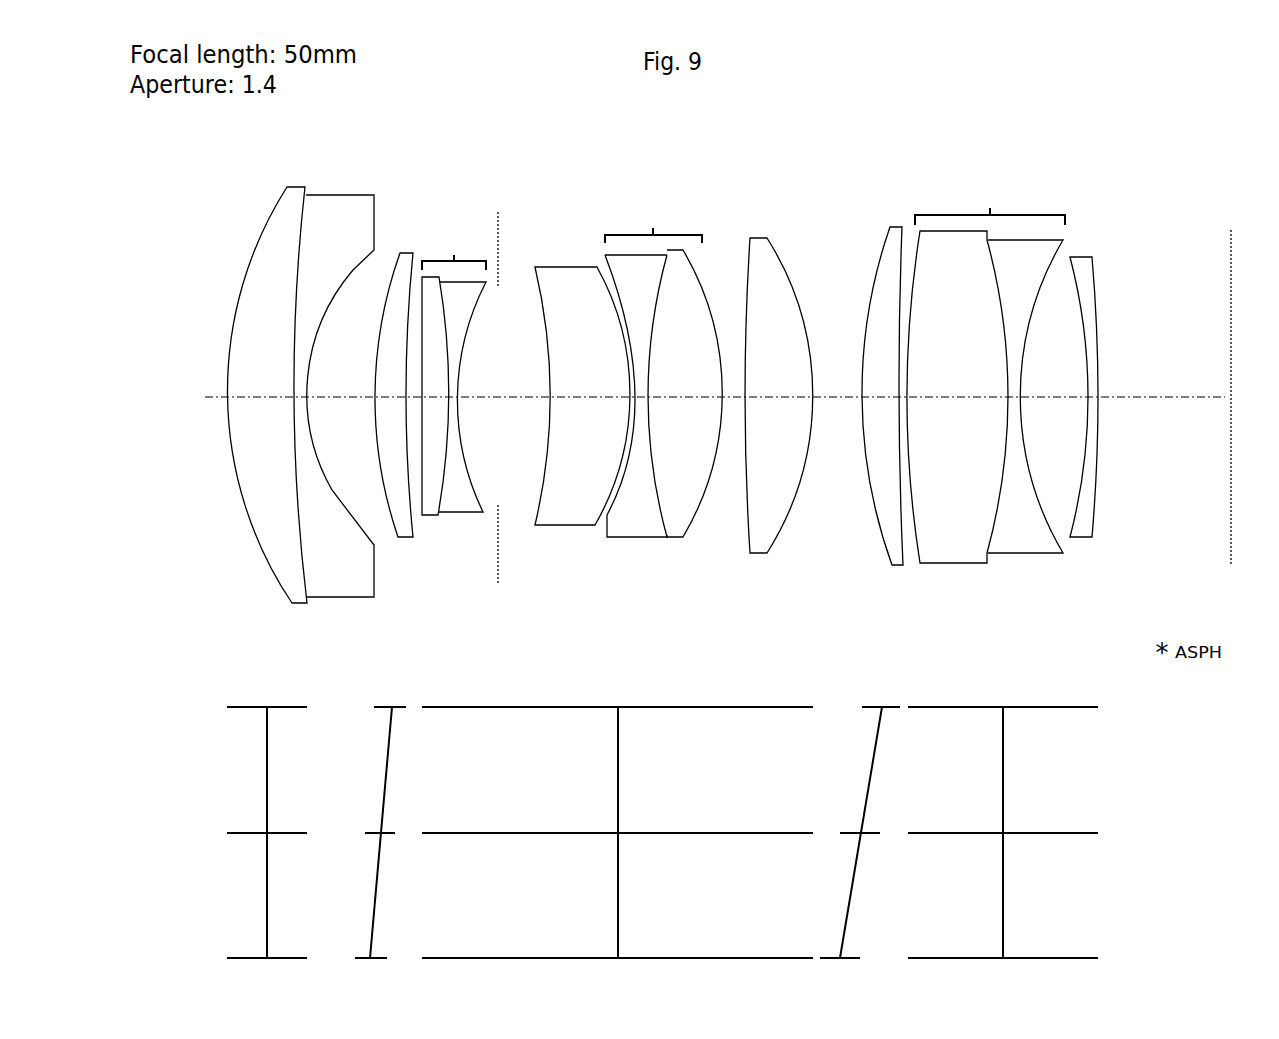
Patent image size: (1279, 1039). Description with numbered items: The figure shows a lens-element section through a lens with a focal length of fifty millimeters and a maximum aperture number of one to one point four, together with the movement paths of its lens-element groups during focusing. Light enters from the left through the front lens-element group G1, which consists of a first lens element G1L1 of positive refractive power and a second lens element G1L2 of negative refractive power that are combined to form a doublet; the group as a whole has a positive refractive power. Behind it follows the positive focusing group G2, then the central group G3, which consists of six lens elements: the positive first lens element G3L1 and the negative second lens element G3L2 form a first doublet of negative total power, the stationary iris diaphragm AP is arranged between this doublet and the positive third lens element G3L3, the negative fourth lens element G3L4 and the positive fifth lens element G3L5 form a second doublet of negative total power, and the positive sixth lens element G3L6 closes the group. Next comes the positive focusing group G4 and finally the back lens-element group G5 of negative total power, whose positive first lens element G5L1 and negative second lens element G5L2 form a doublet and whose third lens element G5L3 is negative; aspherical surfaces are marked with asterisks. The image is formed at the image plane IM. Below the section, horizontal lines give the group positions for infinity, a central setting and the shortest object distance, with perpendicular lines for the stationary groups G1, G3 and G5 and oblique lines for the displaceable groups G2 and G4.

The front lens-element group G1 is at (302, 429).
The first lens element of the front lens-element group G1L1 is at (280, 405).
The second lens element of the front lens-element group G1L2 is at (341, 409).
The second lens-element group G2 is at (374, 661).
The central group G3 is at (615, 434).
The first lens element of the central group G3L1 is at (444, 406).
The second lens element of the central group G3L2 is at (475, 409).
The third lens element of the central group G3L3 is at (580, 409).
The fourth lens element of the central group G3L4 is at (630, 410).
The fifth lens element of the central group G3L5 is at (686, 408).
The sixth lens element of the central group G3L6 is at (775, 409).
The iris diaphragm AP is at (499, 406).
The fourth lens-element group G4 is at (860, 661).
The back lens-element group G5 is at (1010, 425).
The first lens element of the back lens-element group G5L1 is at (957, 409).
The second lens element of the back lens-element group G5L2 is at (1025, 413).
The third lens element of the back lens-element group G5L3 is at (1091, 408).
The image plane IM is at (1231, 419).